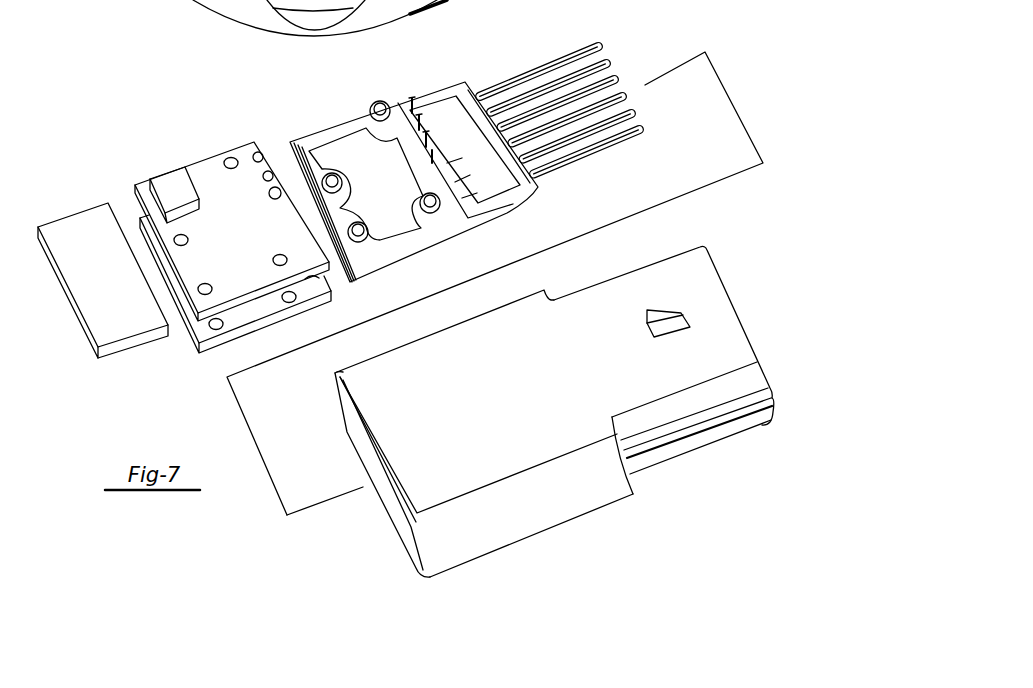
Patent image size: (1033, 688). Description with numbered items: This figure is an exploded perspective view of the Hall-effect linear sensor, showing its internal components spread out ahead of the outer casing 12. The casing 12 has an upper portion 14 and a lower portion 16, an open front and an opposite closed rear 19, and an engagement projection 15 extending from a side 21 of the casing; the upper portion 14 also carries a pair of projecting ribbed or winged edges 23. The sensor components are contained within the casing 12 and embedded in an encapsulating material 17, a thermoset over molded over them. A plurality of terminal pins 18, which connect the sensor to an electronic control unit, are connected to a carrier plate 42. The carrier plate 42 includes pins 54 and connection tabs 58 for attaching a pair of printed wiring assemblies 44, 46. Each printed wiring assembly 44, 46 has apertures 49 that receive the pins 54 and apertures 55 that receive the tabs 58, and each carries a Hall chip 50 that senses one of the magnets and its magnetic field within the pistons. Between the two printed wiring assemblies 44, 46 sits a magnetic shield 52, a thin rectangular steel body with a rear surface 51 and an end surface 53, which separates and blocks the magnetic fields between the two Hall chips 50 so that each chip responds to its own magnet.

The outer casing 12 is at (577, 467).
The upper portion 14 is at (612, 317).
The engagement projection 15 is at (643, 308).
The lower portion 16 is at (512, 503).
The encapsulating material 17 is at (724, 284).
The terminal pins 18 is at (617, 73).
The closed rear 19 is at (385, 490).
The side 21 is at (476, 398).
The ribbed or winged edges 23 is at (768, 420).
The carrier plate 42 is at (405, 250).
The printed wiring assembly 44 is at (207, 170).
The printed wiring assembly 46 is at (233, 315).
The apertures 49 is at (276, 187).
The Hall chip 50 is at (170, 182).
The rear surface 51 is at (78, 315).
The magnetic shield 52 is at (83, 227).
The end surface 53 is at (123, 343).
The pins 54 is at (415, 100).
The apertures 55 is at (177, 240).
The connection tabs 58 is at (332, 172).